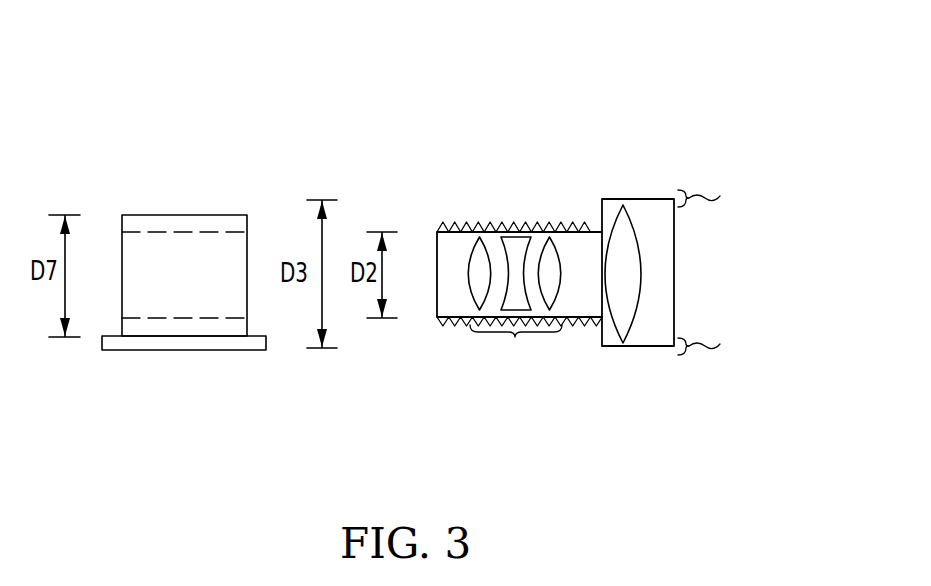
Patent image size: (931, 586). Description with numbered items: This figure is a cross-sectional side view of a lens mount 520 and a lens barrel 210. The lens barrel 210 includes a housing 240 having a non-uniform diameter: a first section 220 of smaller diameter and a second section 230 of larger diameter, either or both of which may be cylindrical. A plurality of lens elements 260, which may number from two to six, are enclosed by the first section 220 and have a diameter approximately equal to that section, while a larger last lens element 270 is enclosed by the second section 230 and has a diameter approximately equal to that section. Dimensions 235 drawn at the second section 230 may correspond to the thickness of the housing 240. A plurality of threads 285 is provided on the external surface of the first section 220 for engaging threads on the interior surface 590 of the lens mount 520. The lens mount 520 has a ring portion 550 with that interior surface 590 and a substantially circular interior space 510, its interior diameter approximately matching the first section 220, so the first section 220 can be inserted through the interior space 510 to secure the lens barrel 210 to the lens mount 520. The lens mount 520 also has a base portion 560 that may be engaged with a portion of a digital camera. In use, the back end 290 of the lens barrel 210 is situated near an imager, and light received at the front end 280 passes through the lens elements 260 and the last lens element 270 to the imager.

The lens barrel 210 is at (566, 234).
The first section 220 is at (500, 231).
The second section 230 is at (618, 198).
The dimensions 235 is at (724, 271).
The housing 240 is at (556, 234).
The lens elements 260 is at (515, 338).
The last lens element 270 is at (622, 348).
The front end 280 is at (421, 325).
The threads 285 is at (567, 203).
The back end 290 is at (700, 259).
The interior space 510 is at (142, 304).
The lens mount 520 is at (114, 182).
The ring portion 550 is at (172, 220).
The base portion 560 is at (236, 351).
The interior surface 590 is at (203, 309).